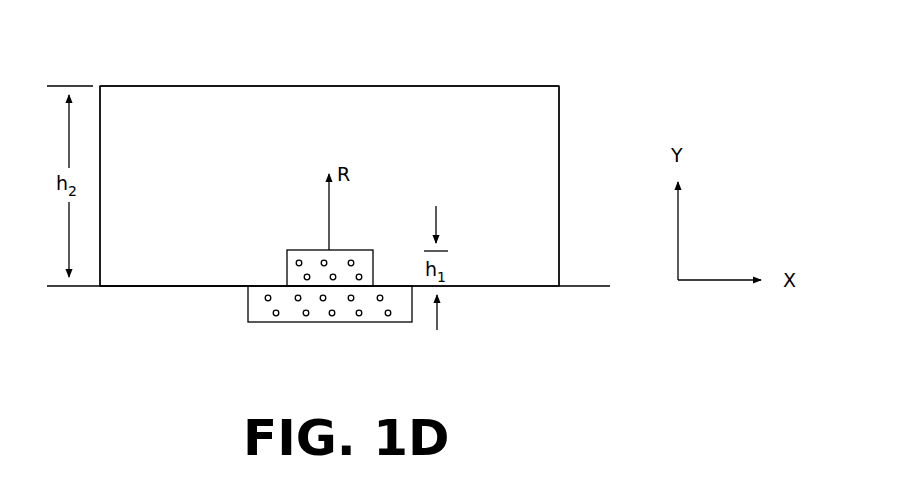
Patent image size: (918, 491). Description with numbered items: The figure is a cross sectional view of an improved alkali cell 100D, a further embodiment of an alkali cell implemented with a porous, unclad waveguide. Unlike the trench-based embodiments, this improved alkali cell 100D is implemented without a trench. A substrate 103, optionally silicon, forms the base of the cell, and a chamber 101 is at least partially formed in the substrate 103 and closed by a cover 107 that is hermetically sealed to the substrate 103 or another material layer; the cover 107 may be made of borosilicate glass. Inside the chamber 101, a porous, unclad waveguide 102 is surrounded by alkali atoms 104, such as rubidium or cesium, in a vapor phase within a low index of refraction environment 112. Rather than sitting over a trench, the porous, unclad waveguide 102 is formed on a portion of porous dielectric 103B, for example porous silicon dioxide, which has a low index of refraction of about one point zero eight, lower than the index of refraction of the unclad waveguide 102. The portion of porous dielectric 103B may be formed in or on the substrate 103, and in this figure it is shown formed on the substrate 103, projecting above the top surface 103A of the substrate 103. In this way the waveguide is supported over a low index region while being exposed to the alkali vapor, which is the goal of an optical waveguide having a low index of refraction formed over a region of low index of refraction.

The improved alkali cell 100D is at (353, 40).
The chamber 101 is at (155, 128).
The porous, unclad waveguide 102 is at (343, 248).
The substrate 103 is at (535, 335).
The top surface of the substrate 103A is at (116, 285).
The portion of porous dielectric 103B is at (303, 323).
The alkali atoms 104 is at (243, 151).
The cover 107 is at (559, 150).
The low index of refraction environment 112 is at (404, 125).